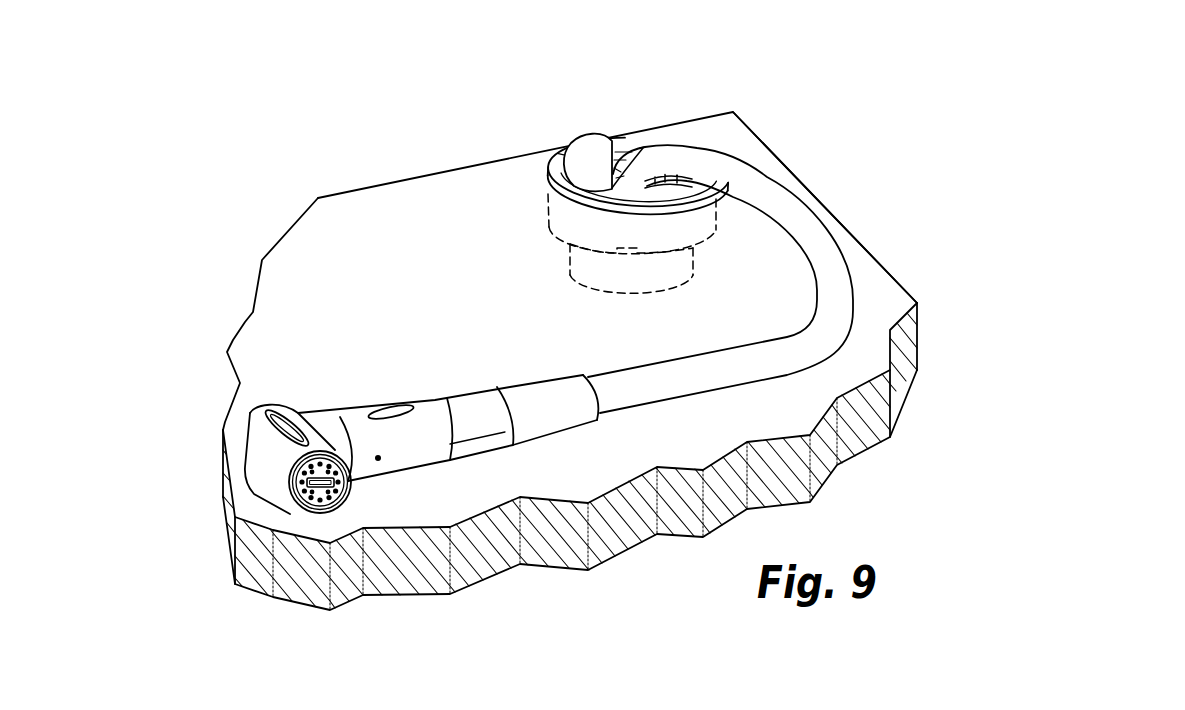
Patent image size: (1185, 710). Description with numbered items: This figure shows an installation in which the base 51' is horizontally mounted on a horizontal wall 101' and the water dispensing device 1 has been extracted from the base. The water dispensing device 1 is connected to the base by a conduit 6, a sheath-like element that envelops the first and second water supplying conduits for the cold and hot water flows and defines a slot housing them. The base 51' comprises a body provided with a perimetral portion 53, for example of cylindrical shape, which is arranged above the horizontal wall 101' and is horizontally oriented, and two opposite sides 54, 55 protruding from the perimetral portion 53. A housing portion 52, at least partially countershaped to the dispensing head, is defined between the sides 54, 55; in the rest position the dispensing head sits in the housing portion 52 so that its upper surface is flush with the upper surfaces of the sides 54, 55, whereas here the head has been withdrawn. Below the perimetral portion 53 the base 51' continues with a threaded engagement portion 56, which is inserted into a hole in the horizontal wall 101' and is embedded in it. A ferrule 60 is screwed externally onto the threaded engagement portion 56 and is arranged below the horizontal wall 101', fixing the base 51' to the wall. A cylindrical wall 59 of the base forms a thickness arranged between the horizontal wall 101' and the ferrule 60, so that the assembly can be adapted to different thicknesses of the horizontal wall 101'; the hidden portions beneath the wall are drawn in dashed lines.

The water dispensing device 1 is at (365, 395).
The conduit 6 is at (805, 236).
The base 51' is at (587, 160).
The housing portion 52 is at (620, 164).
The perimetral portion 53 is at (640, 148).
The side 54 is at (687, 190).
The side 55 is at (588, 165).
The engagement portion 56 is at (670, 275).
The cylindrical wall 59 is at (549, 222).
The ferrule 60 is at (687, 243).
The horizontal wall 101' is at (570, 361).